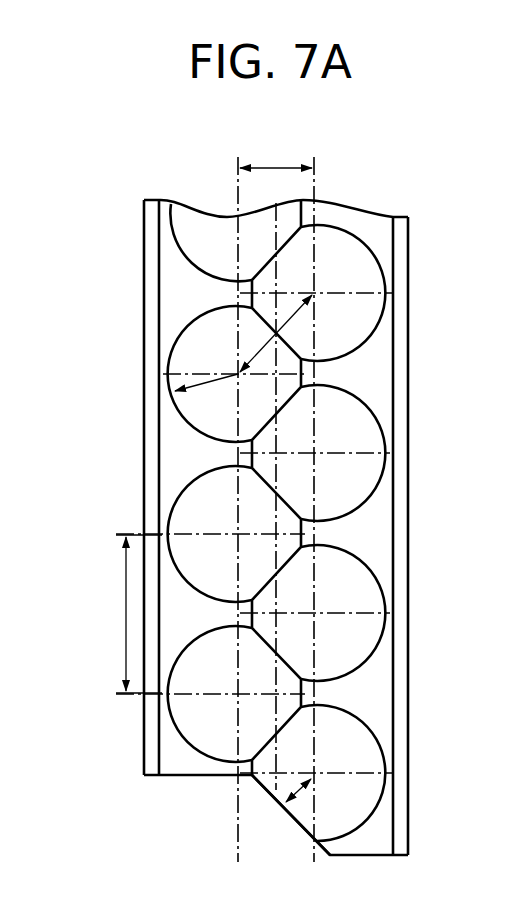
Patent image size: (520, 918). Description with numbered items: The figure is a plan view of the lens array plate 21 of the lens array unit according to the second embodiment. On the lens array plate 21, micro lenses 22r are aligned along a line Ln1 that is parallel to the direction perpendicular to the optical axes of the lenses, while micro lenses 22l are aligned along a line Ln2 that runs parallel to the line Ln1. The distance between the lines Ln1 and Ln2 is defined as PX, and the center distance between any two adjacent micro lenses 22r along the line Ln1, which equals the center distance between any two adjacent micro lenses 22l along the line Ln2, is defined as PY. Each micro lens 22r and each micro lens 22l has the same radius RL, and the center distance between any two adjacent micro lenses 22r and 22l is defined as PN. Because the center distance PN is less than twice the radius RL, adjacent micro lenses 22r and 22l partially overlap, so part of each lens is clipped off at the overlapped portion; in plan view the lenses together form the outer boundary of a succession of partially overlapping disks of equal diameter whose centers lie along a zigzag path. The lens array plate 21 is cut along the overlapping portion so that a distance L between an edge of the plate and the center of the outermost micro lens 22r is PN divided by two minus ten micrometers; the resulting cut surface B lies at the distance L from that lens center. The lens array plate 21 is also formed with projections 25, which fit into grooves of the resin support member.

The lens array plate 21 is at (410, 262).
The micro lenses 22l is at (178, 340).
The micro lenses 22r is at (383, 437).
The projections 25 is at (150, 747).
The line Ln1 is at (315, 175).
The line Ln2 is at (237, 183).
The distance between the lines PX is at (276, 153).
The center distance PY is at (125, 614).
The center distance PN is at (299, 333).
The radius RL is at (206, 396).
The cut surface B is at (290, 816).
The distance L is at (301, 786).